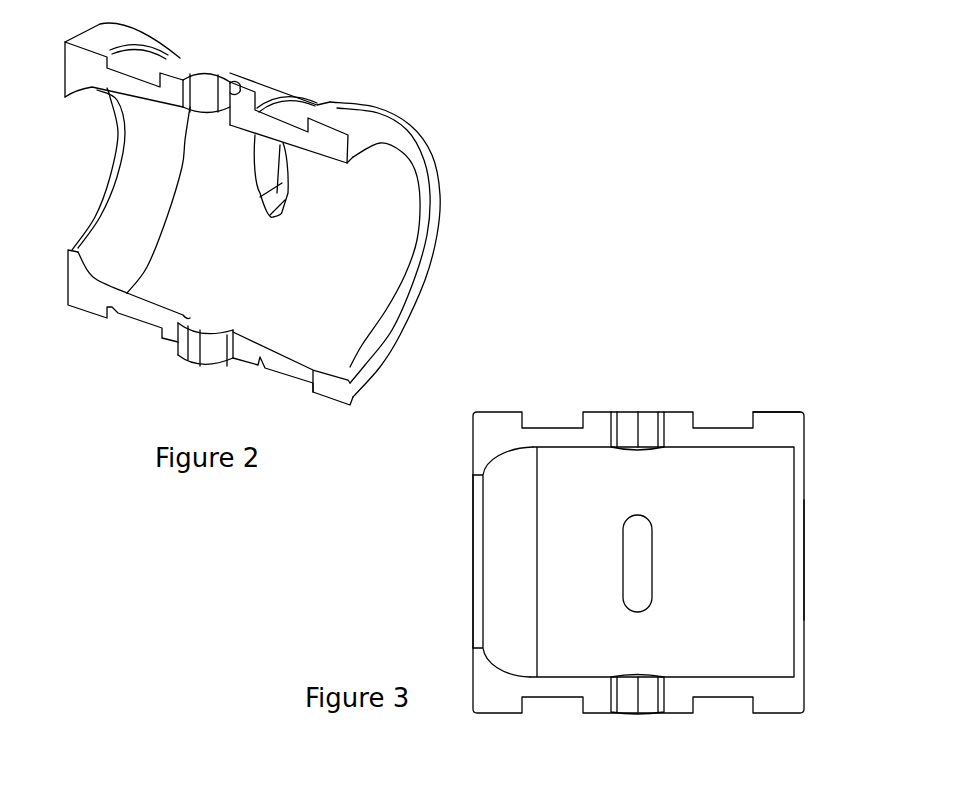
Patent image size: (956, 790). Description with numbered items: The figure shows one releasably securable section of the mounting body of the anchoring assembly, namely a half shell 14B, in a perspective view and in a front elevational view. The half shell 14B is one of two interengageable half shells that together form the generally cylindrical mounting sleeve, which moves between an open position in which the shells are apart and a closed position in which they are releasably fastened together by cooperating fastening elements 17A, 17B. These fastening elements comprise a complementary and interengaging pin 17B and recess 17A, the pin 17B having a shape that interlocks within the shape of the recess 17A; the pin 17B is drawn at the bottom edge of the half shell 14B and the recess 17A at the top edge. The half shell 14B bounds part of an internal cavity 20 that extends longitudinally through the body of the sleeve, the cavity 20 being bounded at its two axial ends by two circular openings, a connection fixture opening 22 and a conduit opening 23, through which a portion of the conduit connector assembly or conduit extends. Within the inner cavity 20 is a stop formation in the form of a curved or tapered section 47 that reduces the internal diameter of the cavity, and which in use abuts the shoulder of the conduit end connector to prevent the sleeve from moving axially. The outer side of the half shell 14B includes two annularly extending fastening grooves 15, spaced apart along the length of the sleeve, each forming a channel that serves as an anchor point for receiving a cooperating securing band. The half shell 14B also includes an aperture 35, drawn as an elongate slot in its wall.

In FIG. 2, the half shell 14B is at (406, 336).
In FIG. 3, the half shell 14B is at (768, 418).
In FIG. 2, the fastening groove 15 is at (182, 52).
In FIG. 2, the recess 17A is at (224, 87).
In FIG. 3, the recess 17A is at (638, 427).
In FIG. 2, the pin 17B is at (197, 347).
In FIG. 3, the pin 17B is at (638, 697).
In FIG. 2, the internal cavity 20 is at (353, 248).
In FIG. 3, the internal cavity 20 is at (581, 535).
In FIG. 2, the connection fixture opening 22 is at (86, 163).
In FIG. 3, the connection fixture opening 22 is at (469, 603).
In FIG. 2, the conduit opening 23 is at (378, 279).
In FIG. 3, the conduit opening 23 is at (812, 615).
In FIG. 2, the aperture 35 is at (302, 176).
In FIG. 3, the aperture 35 is at (640, 568).
In FIG. 2, the stop formation 47 is at (128, 216).
In FIG. 3, the stop formation 47 is at (501, 480).